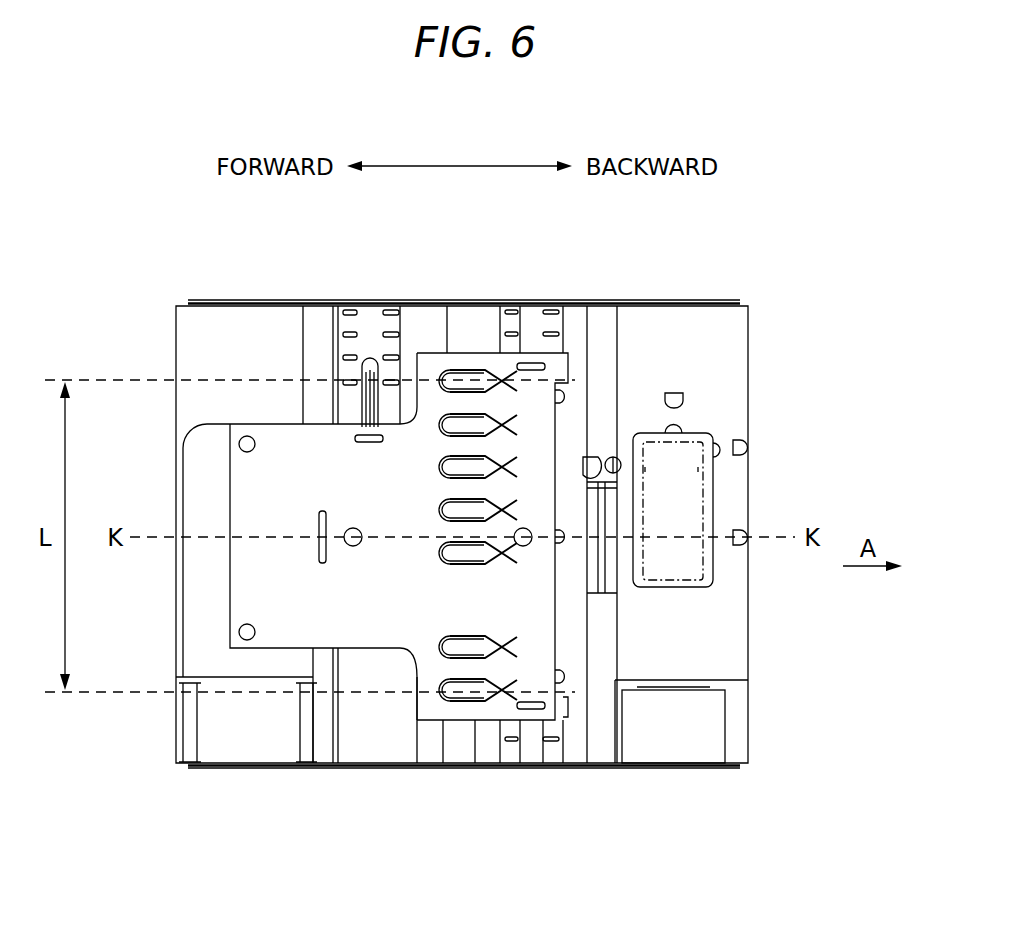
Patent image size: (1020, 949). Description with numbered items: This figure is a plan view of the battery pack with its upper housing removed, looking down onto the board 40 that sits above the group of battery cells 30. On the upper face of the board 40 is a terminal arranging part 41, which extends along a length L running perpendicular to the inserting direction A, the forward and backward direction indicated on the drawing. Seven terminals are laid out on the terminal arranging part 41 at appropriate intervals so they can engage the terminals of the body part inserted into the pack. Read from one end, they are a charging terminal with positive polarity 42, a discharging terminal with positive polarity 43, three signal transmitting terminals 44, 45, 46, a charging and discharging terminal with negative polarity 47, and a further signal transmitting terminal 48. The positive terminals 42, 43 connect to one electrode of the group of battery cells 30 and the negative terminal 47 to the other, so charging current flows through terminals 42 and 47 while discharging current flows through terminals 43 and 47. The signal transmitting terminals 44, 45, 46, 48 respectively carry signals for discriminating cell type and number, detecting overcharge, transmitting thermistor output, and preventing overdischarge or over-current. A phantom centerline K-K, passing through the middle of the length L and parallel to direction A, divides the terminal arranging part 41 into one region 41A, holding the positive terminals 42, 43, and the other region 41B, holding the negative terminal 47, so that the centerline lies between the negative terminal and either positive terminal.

The group of battery cells 30 is at (737, 648).
The board 40 is at (380, 650).
The terminal arranging part 41 is at (520, 403).
The region of the terminal arranging part 41A is at (226, 587).
The other region of the terminal arranging part 41B is at (226, 484).
The charging terminal with positive polarity 42 is at (492, 705).
The discharging terminal with positive polarity 43 is at (505, 660).
The signal transmitting terminal 44 is at (510, 563).
The signal transmitting terminal 45 is at (500, 503).
The signal transmitting terminal 46 is at (497, 457).
The charging and discharging terminal with negative polarity 47 is at (512, 420).
The signal transmitting terminal 48 is at (492, 369).